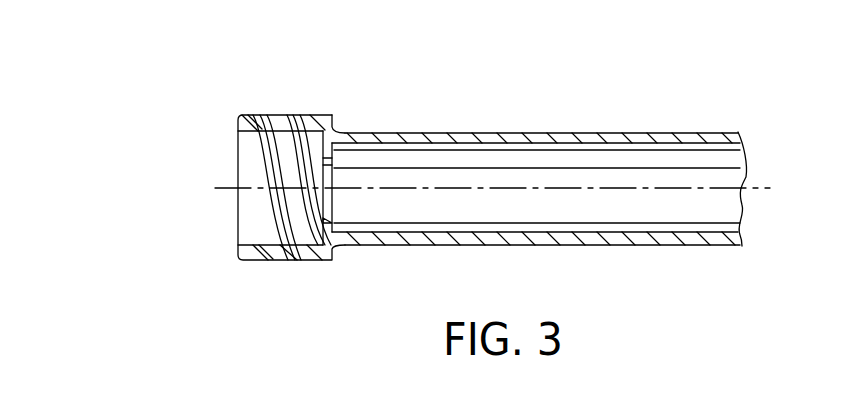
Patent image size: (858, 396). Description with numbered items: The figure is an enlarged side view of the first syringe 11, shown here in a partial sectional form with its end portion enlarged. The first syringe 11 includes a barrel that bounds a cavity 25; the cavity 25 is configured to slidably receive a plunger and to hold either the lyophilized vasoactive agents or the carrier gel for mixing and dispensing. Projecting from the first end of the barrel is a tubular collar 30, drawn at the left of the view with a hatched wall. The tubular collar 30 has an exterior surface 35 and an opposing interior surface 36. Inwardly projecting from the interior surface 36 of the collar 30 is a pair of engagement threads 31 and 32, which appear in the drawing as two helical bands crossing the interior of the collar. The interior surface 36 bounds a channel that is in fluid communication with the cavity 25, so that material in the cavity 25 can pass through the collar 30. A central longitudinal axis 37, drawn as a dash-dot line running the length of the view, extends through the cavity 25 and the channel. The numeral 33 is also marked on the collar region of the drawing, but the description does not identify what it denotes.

The first syringe 11 is at (515, 245).
The cavity 25 is at (420, 162).
The tubular collar 30 is at (250, 117).
The engagement thread 31 is at (258, 116).
The engagement thread 32 is at (292, 116).
The fitting body 33 is at (253, 215).
The exterior surface 35 is at (255, 262).
The interior surface 36 is at (303, 262).
The central longitudinal axis 37 is at (610, 192).